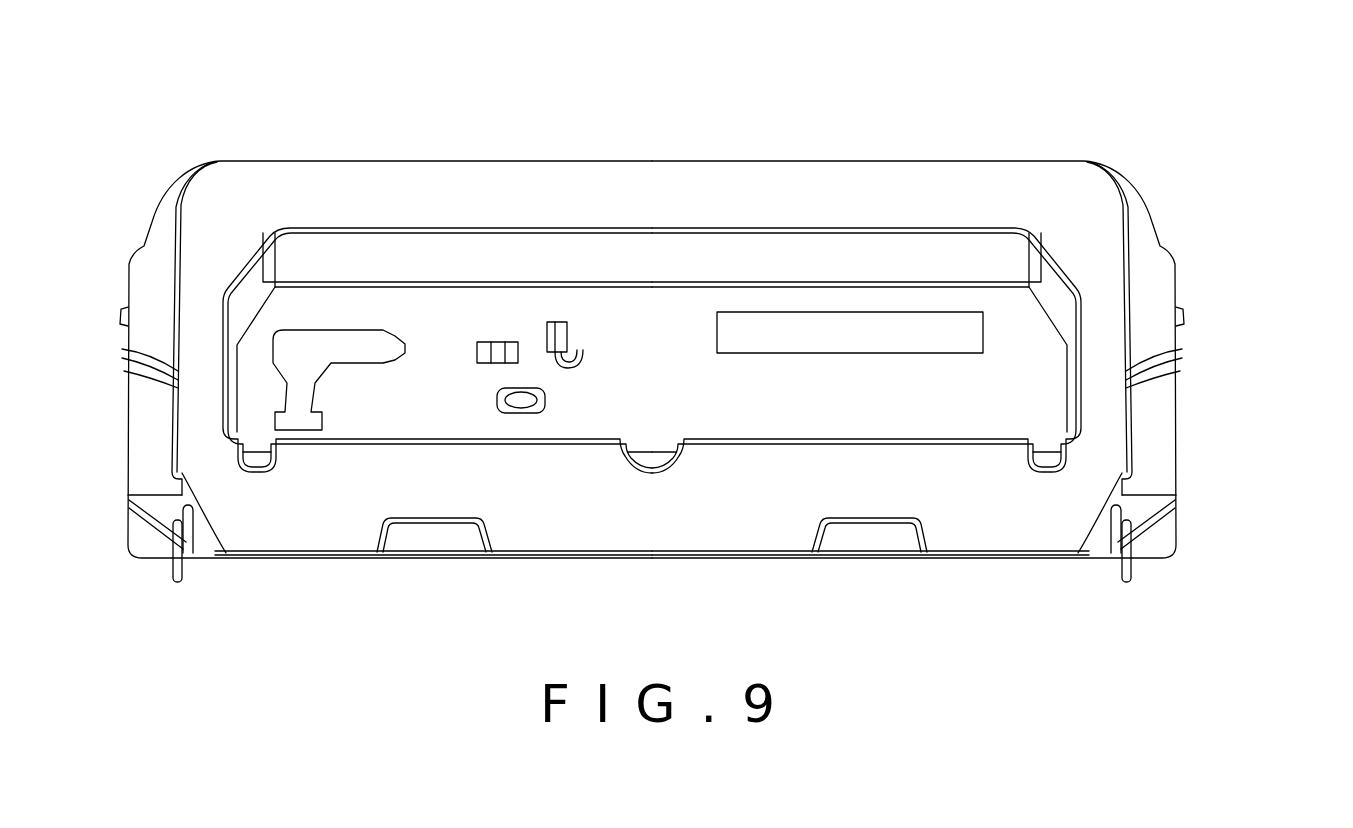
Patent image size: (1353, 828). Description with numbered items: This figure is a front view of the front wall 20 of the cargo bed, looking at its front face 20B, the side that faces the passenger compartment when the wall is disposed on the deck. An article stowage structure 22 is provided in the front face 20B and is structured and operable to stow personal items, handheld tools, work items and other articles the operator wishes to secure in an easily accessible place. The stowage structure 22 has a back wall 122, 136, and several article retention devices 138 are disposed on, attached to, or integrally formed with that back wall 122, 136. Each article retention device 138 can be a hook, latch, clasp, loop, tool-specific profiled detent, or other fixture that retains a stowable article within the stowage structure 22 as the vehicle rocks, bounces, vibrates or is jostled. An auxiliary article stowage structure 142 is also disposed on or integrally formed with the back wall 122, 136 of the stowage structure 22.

The front wall 20 is at (566, 103).
The front face 20B is at (858, 200).
The article stowage structure 22 is at (957, 263).
The back wall 122 is at (417, 405).
The back wall 136 is at (652, 350).
The article retention device 138 is at (330, 338).
The auxiliary article stowage structure 142 is at (963, 337).